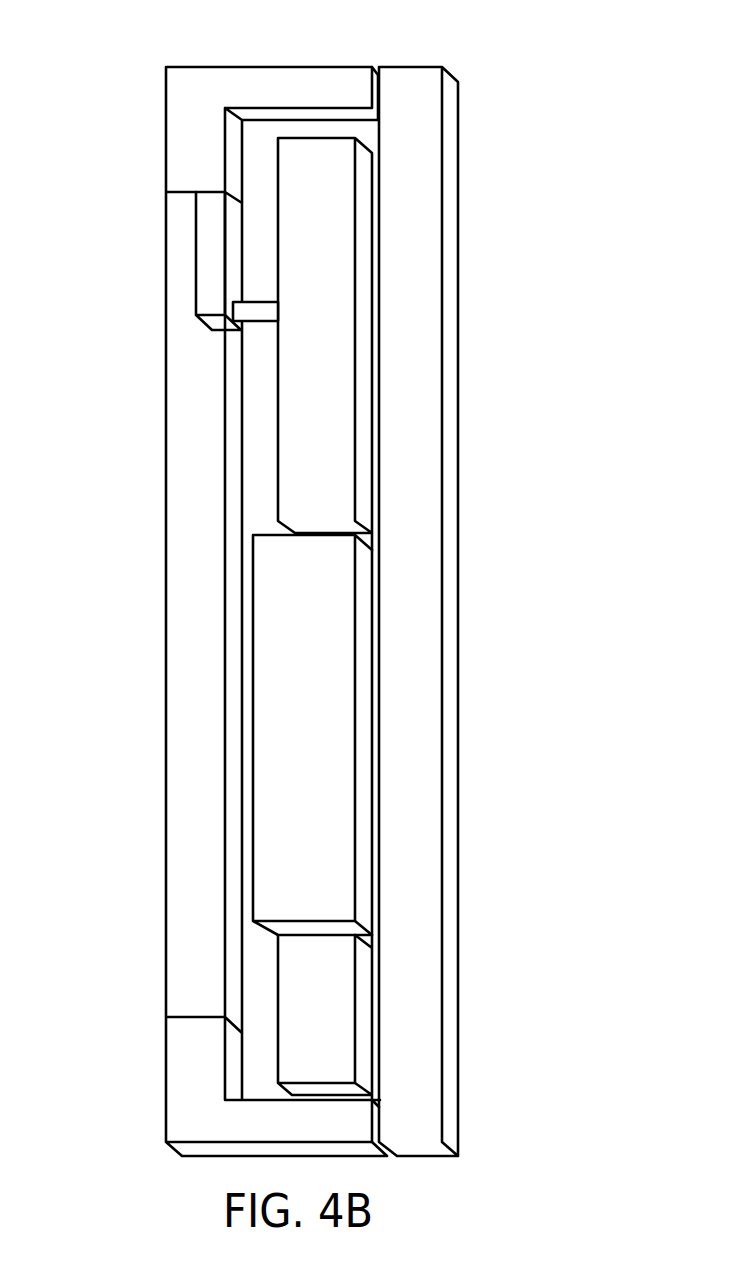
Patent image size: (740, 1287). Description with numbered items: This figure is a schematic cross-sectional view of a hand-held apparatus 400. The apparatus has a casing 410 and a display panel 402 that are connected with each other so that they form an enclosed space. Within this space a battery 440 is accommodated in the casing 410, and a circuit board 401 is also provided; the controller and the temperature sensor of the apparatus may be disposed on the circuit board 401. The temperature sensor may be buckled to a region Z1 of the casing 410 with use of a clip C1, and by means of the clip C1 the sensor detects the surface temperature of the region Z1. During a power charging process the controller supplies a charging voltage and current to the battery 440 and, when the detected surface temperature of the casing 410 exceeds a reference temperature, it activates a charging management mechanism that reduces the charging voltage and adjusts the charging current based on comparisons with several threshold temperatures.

The hand-held apparatus 400 is at (325, 588).
The circuit board 401 is at (305, 155).
The display panel 402 is at (450, 148).
The casing 410 is at (190, 66).
The battery 440 is at (342, 288).
The region Z1 is at (213, 245).
The clip C1 is at (258, 325).